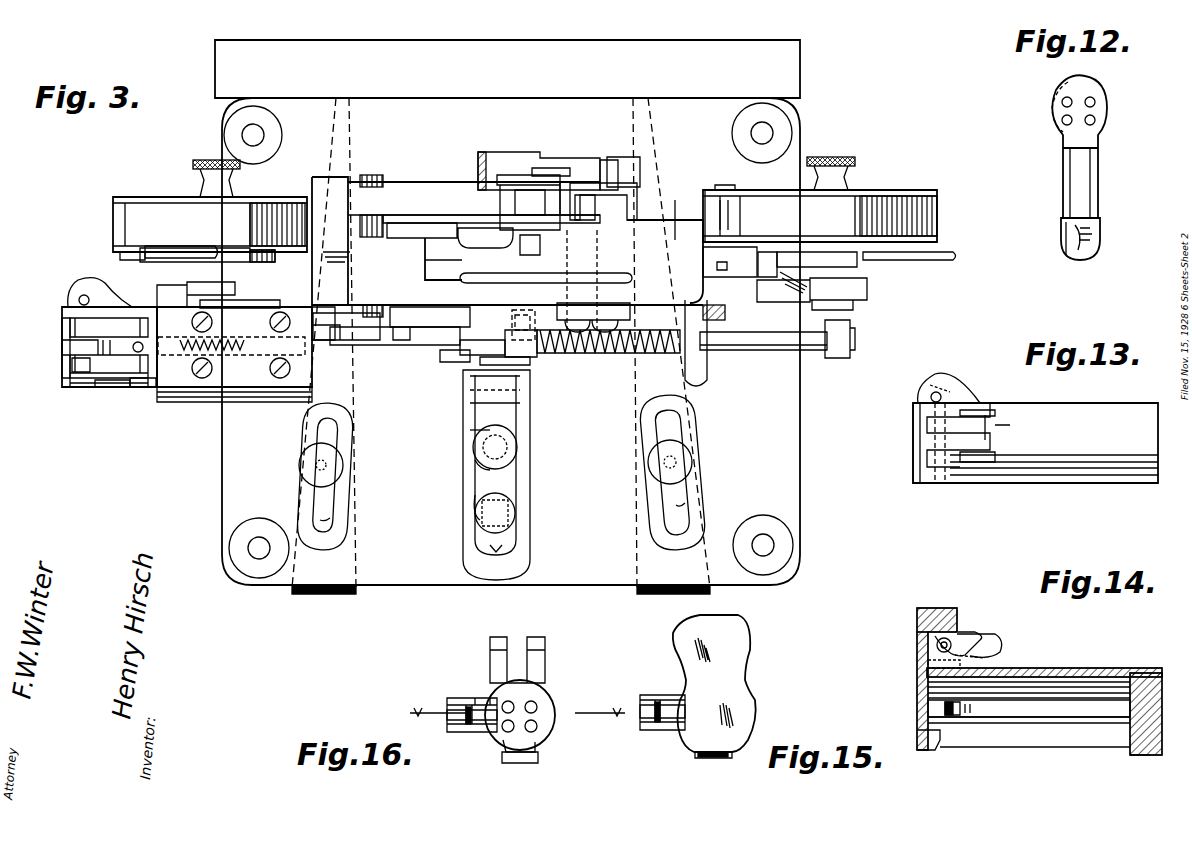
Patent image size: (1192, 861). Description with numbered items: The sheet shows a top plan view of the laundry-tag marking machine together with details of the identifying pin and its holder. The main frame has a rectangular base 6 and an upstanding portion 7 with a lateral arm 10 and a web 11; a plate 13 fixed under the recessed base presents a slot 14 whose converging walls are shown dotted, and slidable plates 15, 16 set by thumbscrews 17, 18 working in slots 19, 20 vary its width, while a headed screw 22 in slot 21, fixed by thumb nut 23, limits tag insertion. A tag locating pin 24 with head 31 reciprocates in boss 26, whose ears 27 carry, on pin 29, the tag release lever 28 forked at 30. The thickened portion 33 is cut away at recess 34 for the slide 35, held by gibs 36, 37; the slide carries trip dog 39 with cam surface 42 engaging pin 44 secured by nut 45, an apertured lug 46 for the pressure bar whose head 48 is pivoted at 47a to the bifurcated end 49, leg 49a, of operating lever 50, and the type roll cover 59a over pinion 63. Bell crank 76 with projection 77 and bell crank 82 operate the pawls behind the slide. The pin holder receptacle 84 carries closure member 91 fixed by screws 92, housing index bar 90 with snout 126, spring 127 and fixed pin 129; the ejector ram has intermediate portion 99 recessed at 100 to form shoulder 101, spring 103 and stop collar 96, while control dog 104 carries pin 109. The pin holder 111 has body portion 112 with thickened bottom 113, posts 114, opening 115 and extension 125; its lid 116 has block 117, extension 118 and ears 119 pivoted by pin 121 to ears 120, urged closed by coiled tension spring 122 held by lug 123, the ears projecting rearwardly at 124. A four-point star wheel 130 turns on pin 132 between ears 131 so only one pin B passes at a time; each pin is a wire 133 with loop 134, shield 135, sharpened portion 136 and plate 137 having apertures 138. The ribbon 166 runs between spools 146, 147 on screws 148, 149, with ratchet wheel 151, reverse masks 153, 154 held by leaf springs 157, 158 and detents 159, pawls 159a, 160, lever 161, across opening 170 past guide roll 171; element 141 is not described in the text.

In FIG. 3, the base 6 is at (692, 105).
In FIG. 3, the upstanding portion 7 is at (728, 305).
In FIG. 3, the lateral arm 10 is at (868, 291).
In FIG. 3, the web 11 is at (708, 377).
In FIG. 3, the plate 13 is at (300, 52).
In FIG. 3, the slot 14 is at (338, 136).
In FIG. 3, the slidable plate 15 is at (336, 590).
In FIG. 3, the slidable plate 16 is at (660, 590).
In FIG. 3, the thumbscrew 17 is at (345, 470).
In FIG. 16, the thumbscrew 17 is at (503, 714).
In FIG. 3, the thumbscrew 18 is at (692, 450).
In FIG. 3, the slot 19 is at (330, 520).
In FIG. 3, the slot 20 is at (690, 505).
In FIG. 3, the slot 21 is at (505, 553).
In FIG. 3, the headed screw 22 is at (515, 510).
In FIG. 3, the thumb nut 23 is at (478, 512).
In FIG. 3, the tag locating pin 24 is at (470, 440).
In FIG. 3, the boss 26 is at (518, 445).
In FIG. 3, the ears 27 is at (520, 409).
In FIG. 3, the tag release lever 28 is at (522, 383).
In FIG. 3, the pin 29 is at (520, 396).
In FIG. 3, the fork 30 is at (508, 452).
In FIG. 3, the head 31 is at (478, 462).
In FIG. 3, the thickened portion 33 is at (507, 246).
In FIG. 3, the recess 34 is at (660, 266).
In FIG. 3, the slide 35 is at (461, 247).
In FIG. 3, the gib 36 is at (678, 200).
In FIG. 3, the gib 37 is at (415, 195).
In FIG. 3, the trip dog 39 is at (428, 275).
In FIG. 3, the cam surface 42 is at (620, 185).
In FIG. 3, the pin 44 is at (570, 246).
In FIG. 3, the nut 45 is at (609, 317).
In FIG. 3, the apertured lug 46 is at (610, 160).
In FIG. 3, the pivotal connection 47a is at (538, 168).
In FIG. 3, the apertured head 48 is at (515, 200).
In FIG. 3, the bifurcated end 49 is at (512, 175).
In FIG. 3, the leg 49a is at (580, 196).
In FIG. 3, the operating lever 50 is at (445, 195).
In FIG. 3, the type roll cover 59a is at (608, 160).
In FIG. 3, the pinion 63 is at (323, 341).
In FIG. 3, the bell crank 76 is at (432, 322).
In FIG. 3, the projection 77 is at (420, 350).
In FIG. 3, the bell crank 82 is at (342, 320).
In FIG. 3, the pin holder receptacle 84 is at (208, 403).
In FIG. 3, the index bar 90 is at (192, 318).
In FIG. 3, the closure member 91 is at (244, 400).
In FIG. 3, the screws 92 is at (270, 320).
In FIG. 3, the stop collar 96 is at (852, 325).
In FIG. 3, the intermediate portion 99 is at (455, 360).
In FIG. 3, the recess 100 is at (462, 340).
In FIG. 3, the shoulder 101 is at (532, 365).
In FIG. 3, the spring 103 is at (605, 358).
In FIG. 3, the control dog 104 is at (445, 365).
In FIG. 3, the pin 109 is at (520, 312).
In FIG. 3, the pin holder 111 is at (115, 390).
In FIG. 13, the pin holder 111 is at (1105, 400).
In FIG. 13, the body portion 112 is at (1100, 465).
In FIG. 14, the body portion 112 is at (1068, 668).
In FIG. 16, the body portion 112 is at (553, 738).
In FIG. 14, the thickened bottom 113 is at (1132, 736).
In FIG. 16, the thickened bottom 113 is at (542, 724).
In FIG. 14, the posts 114 is at (1045, 725).
In FIG. 16, the opening 115 is at (508, 754).
In FIG. 13, the lid 116 is at (913, 462).
In FIG. 14, the lid 116 is at (928, 706).
In FIG. 15, the lid 116 is at (748, 702).
In FIG. 14, the block 117 is at (940, 750).
In FIG. 15, the extension 118 is at (740, 636).
In FIG. 13, the ears 119 is at (965, 410).
In FIG. 14, the ears 119 is at (985, 660).
In FIG. 16, the ears 119 is at (540, 700).
In FIG. 16, the ears 120 is at (530, 637).
In FIG. 13, the pin 121 is at (942, 485).
In FIG. 14, the pin 121 is at (960, 632).
In FIG. 14, the coiled tension spring 122 is at (936, 648).
In FIG. 3, the lug 123 is at (62, 346).
In FIG. 13, the lug 123 is at (925, 438).
In FIG. 14, the lug 123 is at (935, 608).
In FIG. 3, the rearward projection 124 is at (140, 390).
In FIG. 13, the rearward projection 124 is at (1000, 428).
In FIG. 14, the extension 125 is at (1135, 758).
In FIG. 15, the extension 125 is at (718, 758).
In FIG. 16, the extension 125 is at (540, 760).
In FIG. 3, the snout 126 is at (84, 380).
In FIG. 3, the spring 127 is at (225, 350).
In FIG. 3, the fixed pin 129 is at (255, 349).
In FIG. 14, the fixed pin 129 is at (1000, 640).
In FIG. 3, the four-point star wheel 130 is at (62, 310).
In FIG. 13, the four-point star wheel 130 is at (918, 396).
In FIG. 14, the four-point star wheel 130 is at (972, 708).
In FIG. 15, the four-point star wheel 130 is at (640, 710).
In FIG. 16, the four-point star wheel 130 is at (455, 726).
In FIG. 3, the ears 131 is at (82, 295).
In FIG. 13, the ears 131 is at (952, 375).
In FIG. 15, the ears 131 is at (650, 730).
In FIG. 16, the ears 131 is at (458, 698).
In FIG. 13, the pin 132 is at (935, 380).
In FIG. 16, the pin 132 is at (472, 698).
In FIG. 12, the wire 133 is at (1100, 190).
In FIG. 12, the loop 134 is at (1052, 92).
In FIG. 12, the shield 135 is at (1100, 230).
In FIG. 12, the sharpened portion 136 is at (1066, 240).
In FIG. 12, the plate 137 is at (1097, 100).
In FIG. 12, the apertures 138 is at (1062, 106).
In FIG. 3, the pin 141 is at (134, 342).
In FIG. 3, the spool 146 is at (885, 190).
In FIG. 3, the spool 147 is at (132, 197).
In FIG. 3, the screw 148 is at (850, 157).
In FIG. 3, the screw 149 is at (205, 160).
In FIG. 3, the ratchet wheel 151 is at (140, 260).
In FIG. 3, the reverse mask 153 is at (815, 252).
In FIG. 3, the reverse mask 154 is at (207, 255).
In FIG. 3, the leaf spring 157 is at (790, 295).
In FIG. 3, the leaf spring 158 is at (240, 299).
In FIG. 3, the detent 159 is at (868, 268).
In FIG. 3, the spring-tensioned pawl 159a is at (768, 250).
In FIG. 3, the spring-tensioned pawl 160 is at (338, 262).
In FIG. 3, the lever 161 is at (730, 290).
In FIG. 3, the ribbon 166 is at (698, 185).
In FIG. 3, the opening 170 is at (487, 150).
In FIG. 3, the guide roll 171 is at (732, 200).
In FIG. 12, the pin B is at (1102, 157).